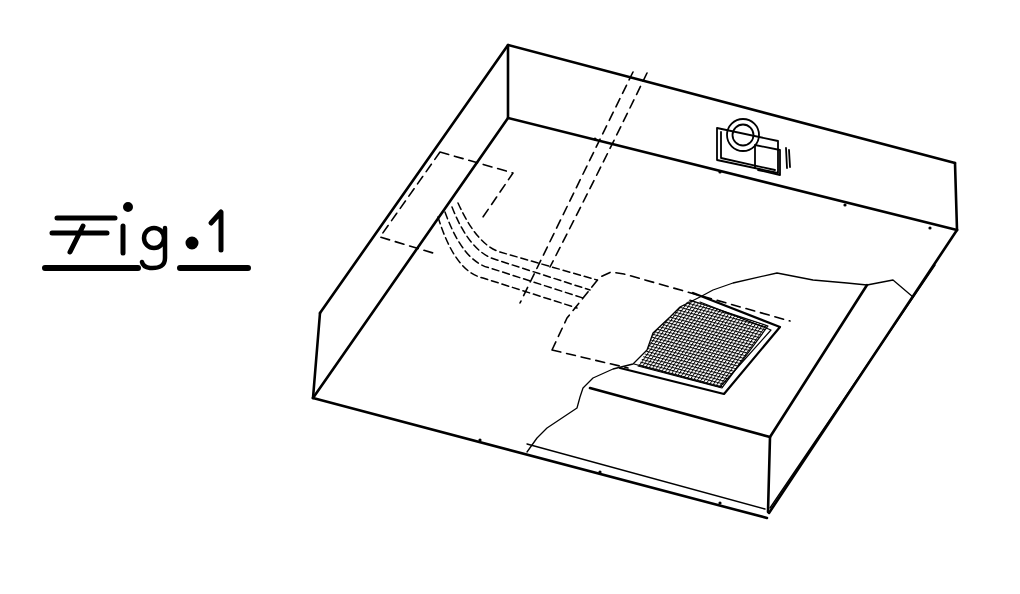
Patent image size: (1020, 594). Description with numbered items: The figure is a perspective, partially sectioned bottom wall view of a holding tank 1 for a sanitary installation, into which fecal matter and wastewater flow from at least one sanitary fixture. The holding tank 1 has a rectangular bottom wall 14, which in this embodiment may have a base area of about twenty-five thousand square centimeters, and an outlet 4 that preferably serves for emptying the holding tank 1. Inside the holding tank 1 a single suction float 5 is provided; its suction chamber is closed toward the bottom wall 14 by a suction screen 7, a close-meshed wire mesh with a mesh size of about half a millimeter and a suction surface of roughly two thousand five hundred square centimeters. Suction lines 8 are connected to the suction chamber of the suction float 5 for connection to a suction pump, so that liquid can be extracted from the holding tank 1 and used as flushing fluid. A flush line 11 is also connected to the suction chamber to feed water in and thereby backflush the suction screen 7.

The holding tank 1 is at (408, 101).
The outlet 4 is at (758, 110).
The suction float 5 is at (763, 358).
The suction screen 7 is at (706, 383).
The suction line 8 is at (633, 72).
The flush line 11 is at (492, 262).
The bottom wall 14 is at (427, 402).